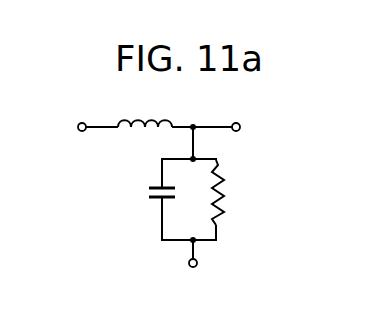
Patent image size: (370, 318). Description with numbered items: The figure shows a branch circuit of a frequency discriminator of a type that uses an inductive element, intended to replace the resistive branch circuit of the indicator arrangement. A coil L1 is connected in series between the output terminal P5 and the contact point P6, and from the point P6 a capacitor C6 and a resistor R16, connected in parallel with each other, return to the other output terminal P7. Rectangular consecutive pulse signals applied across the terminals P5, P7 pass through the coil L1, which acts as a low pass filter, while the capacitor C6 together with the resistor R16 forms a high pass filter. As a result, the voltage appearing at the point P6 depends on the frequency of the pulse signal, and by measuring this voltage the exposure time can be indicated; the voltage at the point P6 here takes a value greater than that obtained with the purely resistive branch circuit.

The output terminal P5 is at (80, 123).
The coil L1 is at (152, 123).
The input terminal (contact point) P6 is at (240, 124).
The capacitor C6 is at (150, 190).
The resistor R16 is at (222, 205).
The output terminal P7 is at (197, 266).